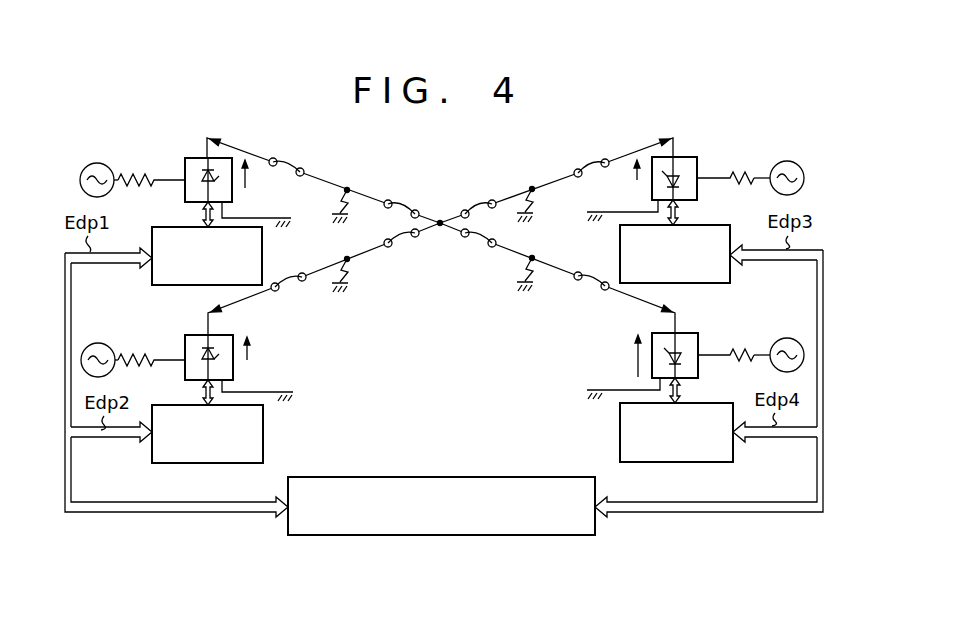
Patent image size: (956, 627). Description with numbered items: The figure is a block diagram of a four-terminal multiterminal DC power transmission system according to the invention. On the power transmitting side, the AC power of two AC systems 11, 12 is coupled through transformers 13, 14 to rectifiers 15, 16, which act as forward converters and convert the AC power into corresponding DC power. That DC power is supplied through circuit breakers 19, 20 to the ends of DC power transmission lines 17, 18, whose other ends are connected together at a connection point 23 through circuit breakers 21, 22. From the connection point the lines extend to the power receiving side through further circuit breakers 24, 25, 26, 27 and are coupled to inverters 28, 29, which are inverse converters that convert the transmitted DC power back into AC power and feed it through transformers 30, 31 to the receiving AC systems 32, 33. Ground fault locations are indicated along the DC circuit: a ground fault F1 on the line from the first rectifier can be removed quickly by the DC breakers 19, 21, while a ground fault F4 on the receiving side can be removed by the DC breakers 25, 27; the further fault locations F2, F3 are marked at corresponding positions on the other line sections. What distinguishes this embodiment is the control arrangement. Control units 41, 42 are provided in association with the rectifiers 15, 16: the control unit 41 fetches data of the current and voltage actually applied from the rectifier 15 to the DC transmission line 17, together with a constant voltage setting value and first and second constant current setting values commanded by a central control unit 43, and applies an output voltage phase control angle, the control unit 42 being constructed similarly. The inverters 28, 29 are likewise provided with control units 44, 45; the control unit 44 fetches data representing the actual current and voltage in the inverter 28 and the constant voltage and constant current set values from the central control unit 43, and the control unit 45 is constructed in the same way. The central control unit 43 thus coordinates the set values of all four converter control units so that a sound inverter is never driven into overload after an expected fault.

The AC system 11 is at (97, 163).
The AC system 12 is at (93, 343).
The transformer 13 is at (137, 170).
The transformer 14 is at (131, 351).
The rectifier 15 is at (190, 160).
The rectifier 16 is at (185, 343).
The DC power transmission line 17 is at (317, 178).
The DC power transmission line 18 is at (363, 258).
The circuit breaker 19 is at (282, 160).
The circuit breaker 20 is at (284, 293).
The circuit breaker 21 is at (401, 201).
The circuit breaker 22 is at (408, 249).
The connection point 23 is at (440, 220).
The circuit breaker 24 is at (480, 201).
The circuit breaker 25 is at (479, 250).
The circuit breaker 26 is at (585, 164).
The circuit breaker 27 is at (585, 291).
The inverter 28 is at (687, 157).
The inverter 29 is at (696, 340).
The transformer 30 is at (742, 164).
The transformer 31 is at (747, 346).
The AC system 32 is at (787, 160).
The AC system 33 is at (788, 339).
The control unit 41 is at (157, 228).
The control unit 42 is at (158, 460).
The central control unit 43 is at (400, 477).
The control unit 44 is at (720, 226).
The control unit 45 is at (729, 453).
The ground fault F1 is at (349, 193).
The fault point / arrester F2 is at (332, 267).
The fault point / arrester F3 is at (534, 192).
The ground fault F4 is at (544, 265).